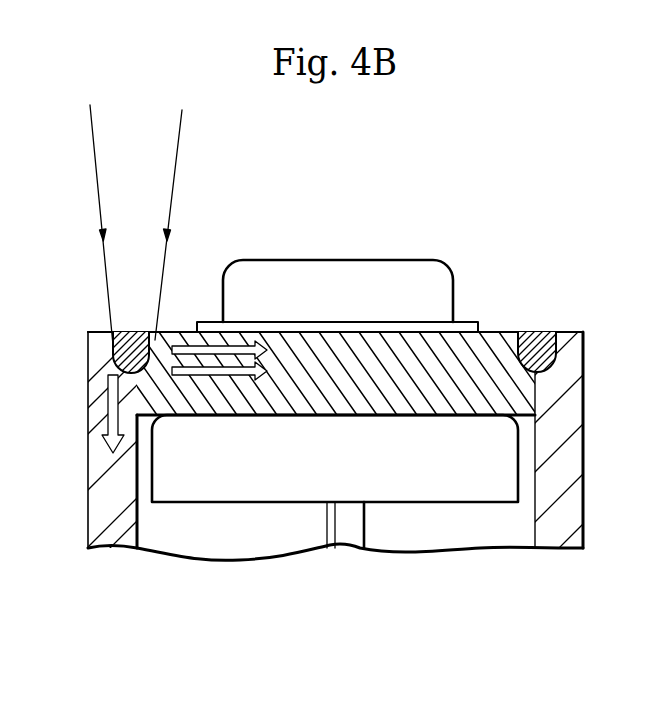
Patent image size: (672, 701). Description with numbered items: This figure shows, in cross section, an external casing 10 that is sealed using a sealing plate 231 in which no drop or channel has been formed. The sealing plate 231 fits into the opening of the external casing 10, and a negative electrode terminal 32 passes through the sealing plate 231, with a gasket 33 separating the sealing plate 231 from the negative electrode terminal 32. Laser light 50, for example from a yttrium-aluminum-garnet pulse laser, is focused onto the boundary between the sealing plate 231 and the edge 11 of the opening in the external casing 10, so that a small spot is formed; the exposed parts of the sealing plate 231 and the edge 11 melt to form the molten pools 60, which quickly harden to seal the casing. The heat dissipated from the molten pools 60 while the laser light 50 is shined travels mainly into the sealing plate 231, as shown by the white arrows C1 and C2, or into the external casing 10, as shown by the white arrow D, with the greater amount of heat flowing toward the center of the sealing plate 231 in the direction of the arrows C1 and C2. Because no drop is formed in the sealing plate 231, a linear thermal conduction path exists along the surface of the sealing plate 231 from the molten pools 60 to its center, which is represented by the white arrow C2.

The external casing 10 is at (565, 512).
The edge of the opening 11 is at (92, 361).
The negative electrode terminal 32 is at (338, 256).
The gasket 33 is at (465, 322).
The laser light 50 is at (173, 170).
The molten pools 60 is at (118, 350).
The sealing plate 231 is at (517, 392).
The white arrow C1 is at (213, 377).
The white arrow C2 is at (185, 333).
The white arrow D is at (107, 407).